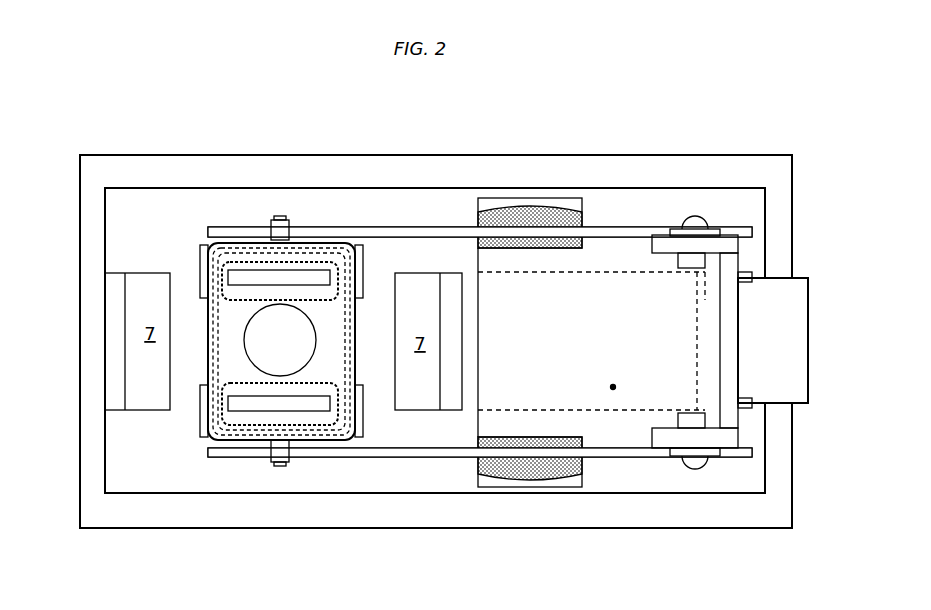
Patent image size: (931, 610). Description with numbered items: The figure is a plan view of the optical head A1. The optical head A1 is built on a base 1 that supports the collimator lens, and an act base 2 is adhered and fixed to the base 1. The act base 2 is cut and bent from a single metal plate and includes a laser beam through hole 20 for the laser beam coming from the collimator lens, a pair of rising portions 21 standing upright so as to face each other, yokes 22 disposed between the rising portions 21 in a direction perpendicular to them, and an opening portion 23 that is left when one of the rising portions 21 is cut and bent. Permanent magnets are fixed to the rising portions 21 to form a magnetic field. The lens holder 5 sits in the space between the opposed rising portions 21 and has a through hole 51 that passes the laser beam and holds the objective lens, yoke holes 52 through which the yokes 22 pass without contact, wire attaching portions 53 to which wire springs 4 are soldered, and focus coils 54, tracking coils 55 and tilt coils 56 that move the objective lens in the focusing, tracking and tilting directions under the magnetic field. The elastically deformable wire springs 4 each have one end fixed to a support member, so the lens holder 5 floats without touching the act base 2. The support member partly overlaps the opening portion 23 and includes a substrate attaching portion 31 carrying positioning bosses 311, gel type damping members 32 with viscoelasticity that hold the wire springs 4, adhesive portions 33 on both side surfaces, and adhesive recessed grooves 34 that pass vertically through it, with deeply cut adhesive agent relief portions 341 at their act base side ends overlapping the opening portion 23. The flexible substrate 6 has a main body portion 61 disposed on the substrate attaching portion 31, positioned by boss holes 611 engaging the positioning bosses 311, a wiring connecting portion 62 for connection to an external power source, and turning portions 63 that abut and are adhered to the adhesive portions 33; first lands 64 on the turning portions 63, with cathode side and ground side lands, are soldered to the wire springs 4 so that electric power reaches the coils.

The optical head A1 is at (134, 135).
The base 1 is at (86, 176).
The act base 2 is at (416, 192).
The wire springs 4 is at (588, 227).
The lens holder 5 is at (207, 441).
The flexible substrate 6 is at (742, 324).
The laser beam through hole 20 is at (225, 345).
The rising portions 21 is at (452, 283).
The yokes 22 is at (247, 276).
The opening portion 23 is at (613, 390).
The substrate attaching portion 31 is at (726, 383).
The positioning bosses 311 is at (752, 280).
The gel type damping members 32 is at (516, 210).
The adhesive portions 33 is at (665, 243).
The adhesive recessed grooves 34 is at (690, 262).
The adhesive agent relief portions 341 is at (690, 276).
The through hole 51 is at (305, 306).
The yoke holes 52 is at (306, 262).
The wire attaching portions 53 is at (277, 218).
The focus coils 54 is at (333, 442).
The tracking coils 55 is at (200, 258).
The tilt coils 56 is at (352, 322).
The main body portion 61 is at (732, 365).
The wiring connecting portion 62 is at (785, 340).
The turning portions 63 is at (693, 240).
The first lands 64 is at (712, 228).
The boss holes 611 is at (742, 266).